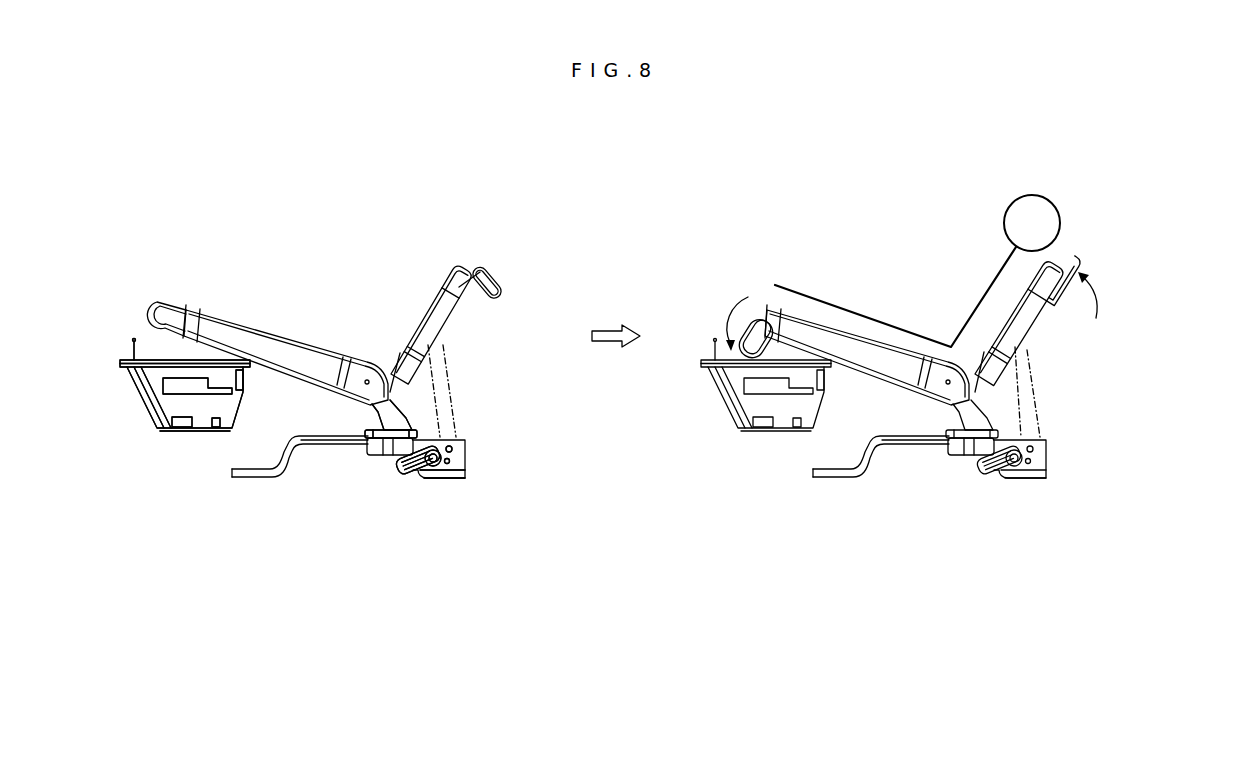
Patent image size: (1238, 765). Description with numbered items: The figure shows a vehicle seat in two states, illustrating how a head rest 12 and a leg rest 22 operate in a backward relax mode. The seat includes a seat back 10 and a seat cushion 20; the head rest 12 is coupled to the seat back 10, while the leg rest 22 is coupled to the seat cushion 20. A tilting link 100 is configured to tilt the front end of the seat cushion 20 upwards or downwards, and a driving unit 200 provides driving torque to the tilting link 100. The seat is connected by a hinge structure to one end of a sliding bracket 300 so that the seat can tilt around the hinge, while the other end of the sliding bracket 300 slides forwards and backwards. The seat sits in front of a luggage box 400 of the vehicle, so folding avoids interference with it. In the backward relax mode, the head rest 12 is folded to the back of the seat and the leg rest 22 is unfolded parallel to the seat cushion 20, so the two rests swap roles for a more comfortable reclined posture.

The seat back 10 is at (247, 306).
The head rest 12 is at (167, 310).
The seat cushion 20 is at (434, 276).
The leg rest 22 is at (487, 287).
The tilting link 100 is at (447, 402).
The driving unit 200 is at (435, 466).
The sliding bracket 300 is at (392, 426).
The luggage box 400 is at (188, 444).